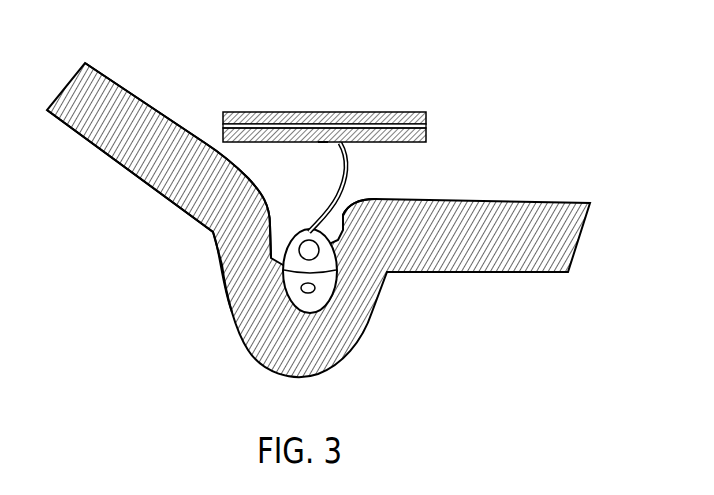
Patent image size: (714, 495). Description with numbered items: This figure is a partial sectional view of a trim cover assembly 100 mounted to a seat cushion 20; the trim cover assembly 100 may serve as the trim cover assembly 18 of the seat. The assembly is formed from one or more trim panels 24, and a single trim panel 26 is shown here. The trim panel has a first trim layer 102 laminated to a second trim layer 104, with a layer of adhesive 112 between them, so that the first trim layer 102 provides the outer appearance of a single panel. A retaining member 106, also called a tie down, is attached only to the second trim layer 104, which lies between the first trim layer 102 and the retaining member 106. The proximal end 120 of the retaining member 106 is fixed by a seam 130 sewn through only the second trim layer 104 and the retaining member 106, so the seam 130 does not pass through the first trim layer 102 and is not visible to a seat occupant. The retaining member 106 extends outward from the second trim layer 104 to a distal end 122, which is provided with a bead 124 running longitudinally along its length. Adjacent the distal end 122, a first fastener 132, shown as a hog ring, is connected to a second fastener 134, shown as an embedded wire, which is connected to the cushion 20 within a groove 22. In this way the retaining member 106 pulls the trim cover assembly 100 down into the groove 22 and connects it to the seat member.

The trim cover assembly 18 is at (393, 114).
The trim panel 26 is at (393, 114).
The trim cover assembly 100 is at (393, 114).
The first trim layer 102 is at (427, 118).
The layer of adhesive 112 is at (427, 126).
The second trim layer 104 is at (428, 136).
The retaining member 106 is at (355, 180).
The seam 130 is at (322, 143).
The proximal end 120 is at (325, 146).
The groove 22 is at (230, 231).
The cushion 20 is at (553, 202).
The distal end 122 is at (257, 285).
The bead 124 is at (281, 267).
The trim panel 24 is at (249, 252).
The first fastener 132 is at (237, 313).
The second fastener 134 is at (316, 289).